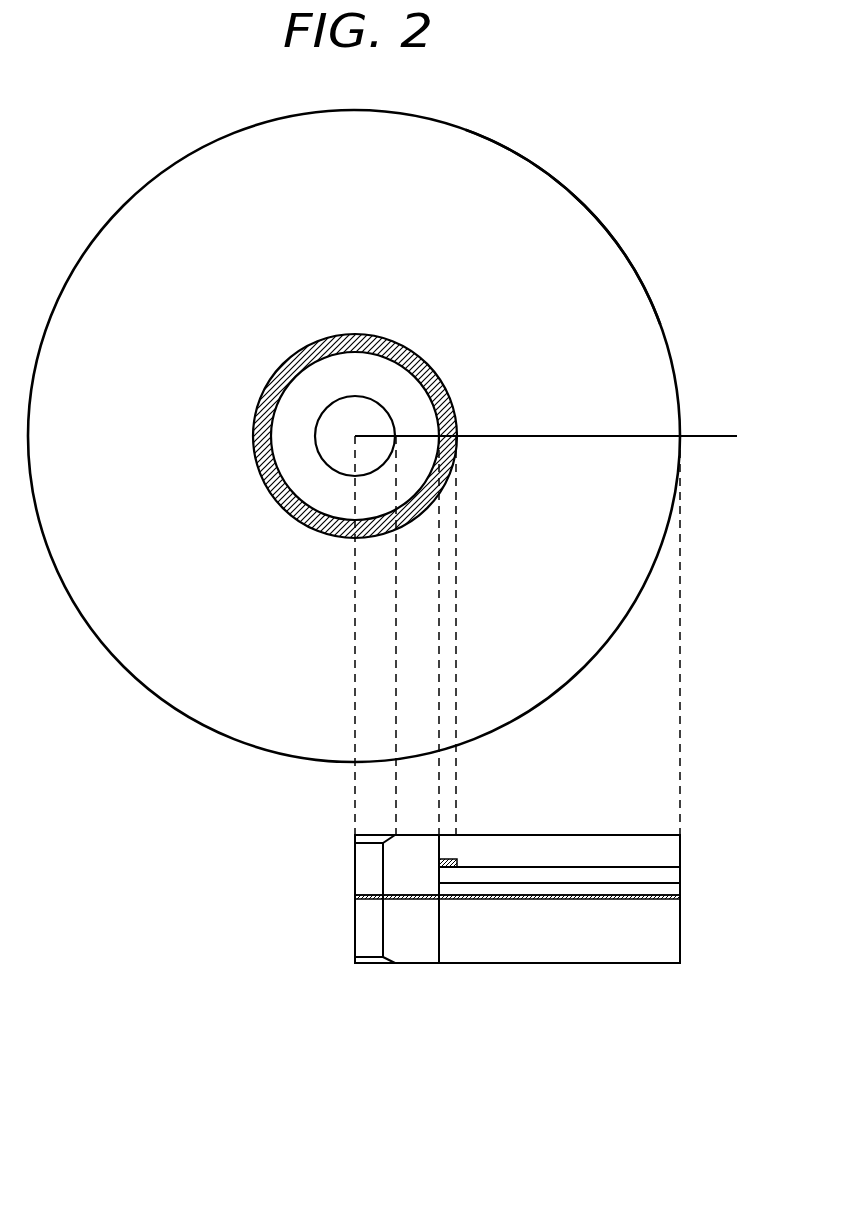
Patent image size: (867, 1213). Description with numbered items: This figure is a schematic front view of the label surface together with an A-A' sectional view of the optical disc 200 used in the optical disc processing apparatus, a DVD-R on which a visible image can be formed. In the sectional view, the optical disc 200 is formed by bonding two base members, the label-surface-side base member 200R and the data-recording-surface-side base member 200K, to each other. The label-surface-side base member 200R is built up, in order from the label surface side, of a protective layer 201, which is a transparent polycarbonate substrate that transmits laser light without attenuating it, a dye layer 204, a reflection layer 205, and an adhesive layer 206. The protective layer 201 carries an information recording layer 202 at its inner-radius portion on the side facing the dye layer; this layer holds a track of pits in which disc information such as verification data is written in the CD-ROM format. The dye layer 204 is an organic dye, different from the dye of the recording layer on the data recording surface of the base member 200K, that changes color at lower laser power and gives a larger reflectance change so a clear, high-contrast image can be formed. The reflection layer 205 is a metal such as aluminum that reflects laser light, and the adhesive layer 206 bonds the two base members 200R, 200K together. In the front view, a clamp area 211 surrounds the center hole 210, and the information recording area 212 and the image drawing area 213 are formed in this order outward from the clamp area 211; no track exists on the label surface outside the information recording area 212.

The optical disc 200 is at (88, 216).
The label-surface-side base member 200R is at (633, 826).
The data-recording-surface-side base member 200K is at (647, 977).
The protective layer 201 is at (675, 847).
The information recording layer 202 is at (450, 858).
The dye layer 204 is at (675, 872).
The reflection layer 205 is at (675, 887).
The adhesive layer 206 is at (675, 897).
The center hole 210 is at (362, 405).
The clamp area 211 is at (400, 395).
The information recording area 212 is at (438, 397).
The image drawing area 213 is at (640, 307).